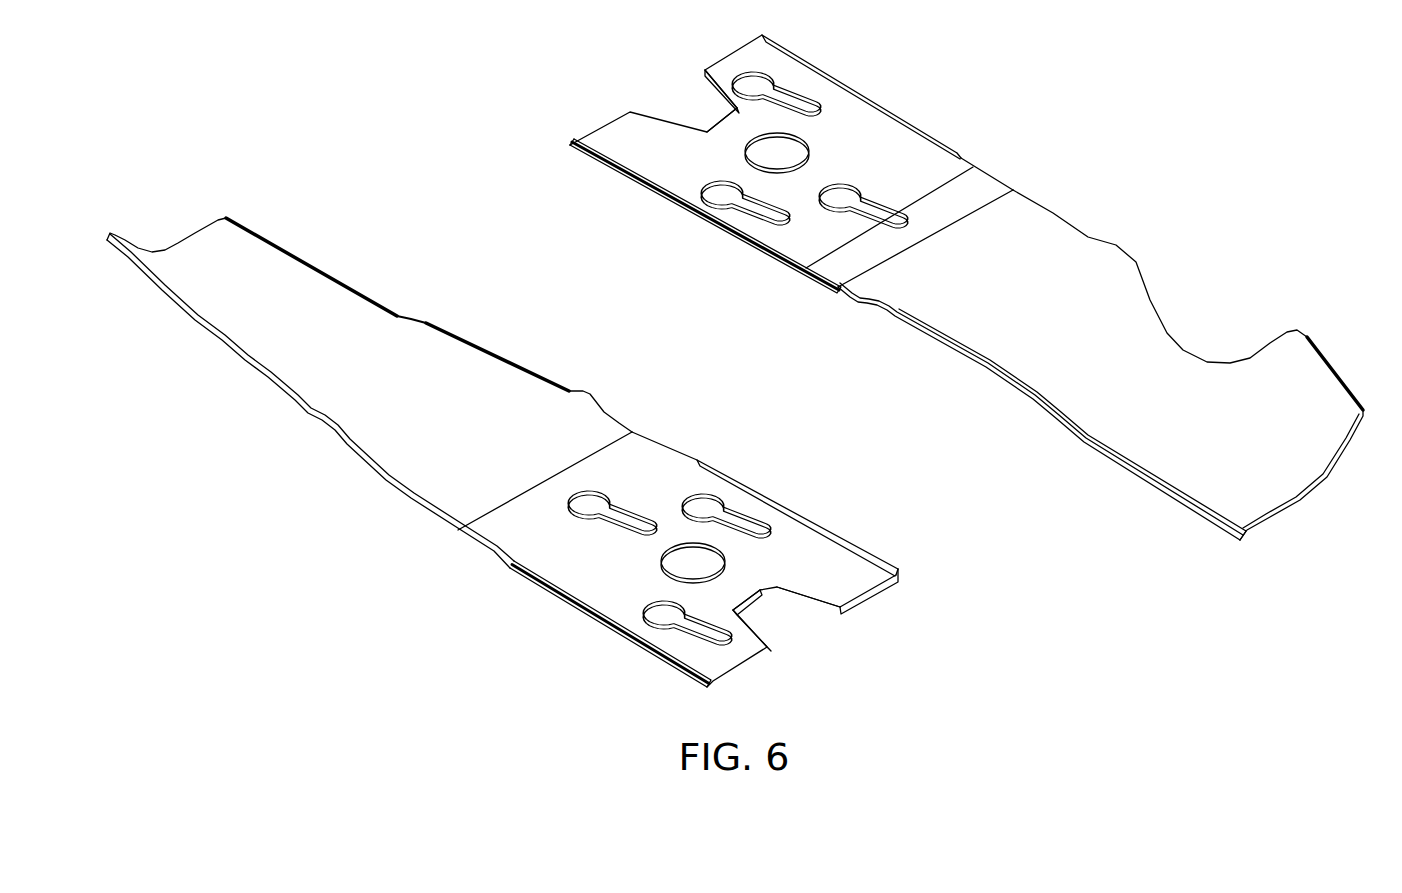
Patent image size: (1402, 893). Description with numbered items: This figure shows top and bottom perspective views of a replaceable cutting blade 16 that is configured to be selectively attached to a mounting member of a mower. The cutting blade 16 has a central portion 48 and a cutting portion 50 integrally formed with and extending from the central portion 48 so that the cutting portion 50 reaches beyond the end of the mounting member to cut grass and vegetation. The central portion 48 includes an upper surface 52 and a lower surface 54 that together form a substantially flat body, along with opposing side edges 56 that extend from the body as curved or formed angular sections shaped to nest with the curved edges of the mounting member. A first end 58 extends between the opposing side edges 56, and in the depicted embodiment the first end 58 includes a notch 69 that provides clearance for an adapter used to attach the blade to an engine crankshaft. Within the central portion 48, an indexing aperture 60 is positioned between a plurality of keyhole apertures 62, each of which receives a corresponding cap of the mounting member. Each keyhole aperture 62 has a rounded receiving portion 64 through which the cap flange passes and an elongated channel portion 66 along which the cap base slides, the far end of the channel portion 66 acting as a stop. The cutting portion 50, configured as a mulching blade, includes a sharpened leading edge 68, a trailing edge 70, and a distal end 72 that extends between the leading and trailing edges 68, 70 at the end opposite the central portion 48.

The cutting blade 16 is at (1323, 512).
The central portion 48 is at (872, 143).
The cutting portion 50 is at (1069, 272).
The upper surface 52 is at (826, 142).
The lower surface 54 is at (592, 163).
The side edges 56 is at (827, 67).
The first end 58 is at (733, 52).
The indexing aperture 60 is at (743, 153).
The keyhole aperture 62 is at (760, 227).
The receiving portion 64 is at (775, 195).
The channel portion 66 is at (712, 187).
The leading edge 68 is at (1197, 517).
The notch 69 is at (715, 91).
The trailing edge 70 is at (1307, 385).
The distal end 72 is at (1352, 433).